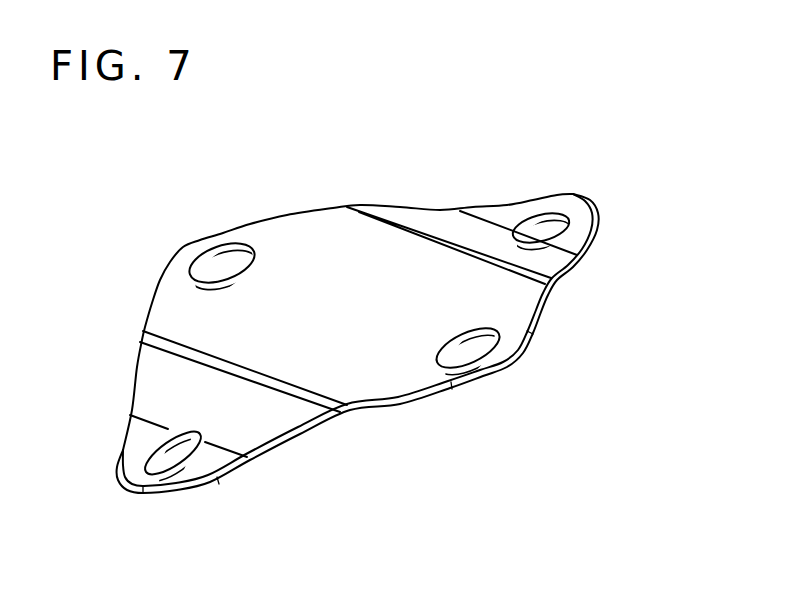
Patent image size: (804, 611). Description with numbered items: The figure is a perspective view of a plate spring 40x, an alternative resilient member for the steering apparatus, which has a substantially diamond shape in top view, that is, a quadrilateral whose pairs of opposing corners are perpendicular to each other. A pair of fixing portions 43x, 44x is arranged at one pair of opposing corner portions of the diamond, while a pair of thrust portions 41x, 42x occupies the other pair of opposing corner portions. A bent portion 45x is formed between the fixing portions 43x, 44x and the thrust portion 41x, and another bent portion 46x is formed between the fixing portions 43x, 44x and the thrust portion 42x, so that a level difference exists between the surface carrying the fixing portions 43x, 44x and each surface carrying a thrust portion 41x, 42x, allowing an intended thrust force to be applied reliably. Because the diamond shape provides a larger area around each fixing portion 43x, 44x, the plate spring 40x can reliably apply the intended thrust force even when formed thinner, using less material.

The plate spring 40x is at (285, 217).
The thrust portion 41x is at (565, 213).
The thrust portion 42x is at (145, 468).
The fixing portion 43x is at (212, 248).
The fixing portion 44x is at (510, 367).
The bent portion 45x is at (553, 282).
The bent portion 46x is at (340, 411).